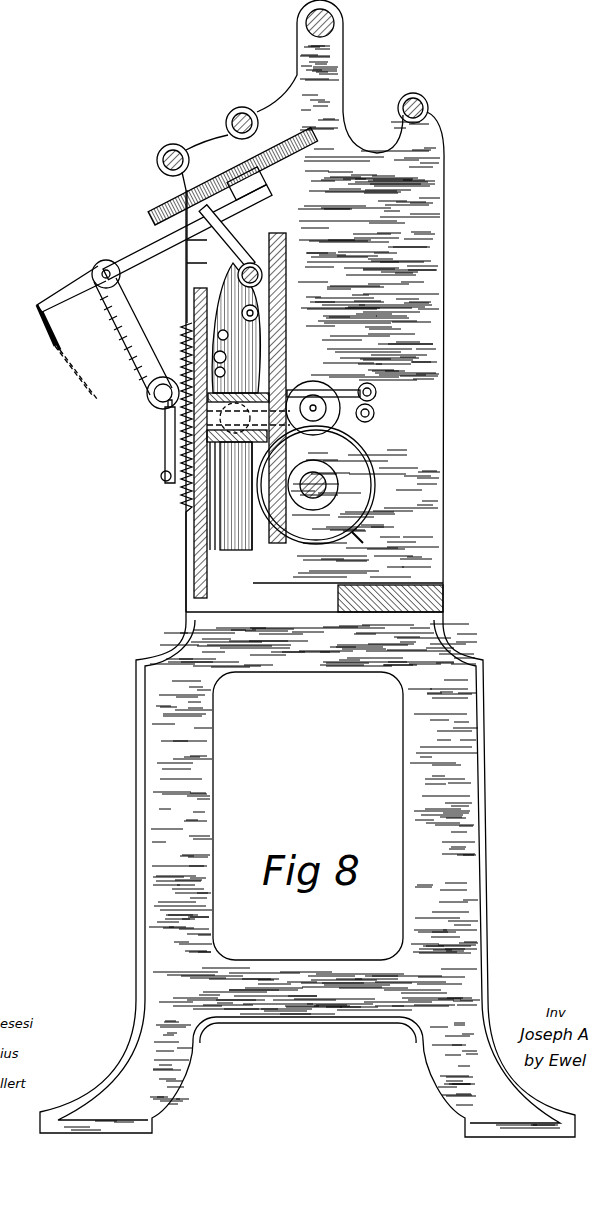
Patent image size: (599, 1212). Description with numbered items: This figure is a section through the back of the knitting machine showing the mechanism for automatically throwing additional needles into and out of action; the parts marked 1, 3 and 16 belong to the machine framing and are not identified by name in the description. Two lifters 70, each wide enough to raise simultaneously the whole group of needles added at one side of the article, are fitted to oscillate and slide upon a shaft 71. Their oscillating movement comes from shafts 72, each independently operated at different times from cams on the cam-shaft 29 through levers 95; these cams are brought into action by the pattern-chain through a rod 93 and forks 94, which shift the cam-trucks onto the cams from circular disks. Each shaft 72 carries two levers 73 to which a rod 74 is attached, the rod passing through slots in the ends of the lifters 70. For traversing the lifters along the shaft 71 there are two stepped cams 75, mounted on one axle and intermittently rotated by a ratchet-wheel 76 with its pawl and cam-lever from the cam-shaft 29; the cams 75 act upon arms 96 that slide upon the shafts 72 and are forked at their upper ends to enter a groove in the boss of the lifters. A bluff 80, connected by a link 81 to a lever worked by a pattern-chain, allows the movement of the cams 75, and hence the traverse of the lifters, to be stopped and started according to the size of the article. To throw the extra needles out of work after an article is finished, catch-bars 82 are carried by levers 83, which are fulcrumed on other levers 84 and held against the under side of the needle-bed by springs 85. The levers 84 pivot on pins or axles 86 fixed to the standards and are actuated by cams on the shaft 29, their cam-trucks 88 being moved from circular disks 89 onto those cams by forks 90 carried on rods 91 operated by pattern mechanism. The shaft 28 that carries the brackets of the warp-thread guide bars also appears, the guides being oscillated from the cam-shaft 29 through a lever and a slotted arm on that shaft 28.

The rack bar 1 is at (295, 153).
The guide roller 3 is at (173, 150).
The frame plate 16 is at (443, 548).
The shaft 28 is at (424, 108).
The cam-shaft 29 is at (326, 481).
The lifter 70 is at (226, 230).
The shaft 71 is at (252, 262).
The shaft 72 is at (360, 525).
The lever 73 is at (248, 471).
The rod 74 is at (287, 313).
The stepped cam 75 is at (193, 301).
The ratchet-wheel 76 is at (182, 335).
The bluff 80 is at (168, 450).
The link 81 is at (161, 477).
The catch-bar 82 is at (270, 176).
The lever 83 is at (134, 275).
The lever 84 is at (347, 343).
The spring 85 is at (71, 332).
The pin or axle 86 is at (146, 394).
The cam-truck 88 is at (368, 441).
The circular disk 89 is at (371, 506).
The fork 90 is at (366, 382).
The rod 91 is at (376, 386).
The rod 93 is at (375, 412).
The fork 94 is at (333, 420).
The lever 95 is at (322, 388).
The arm 96 is at (232, 290).